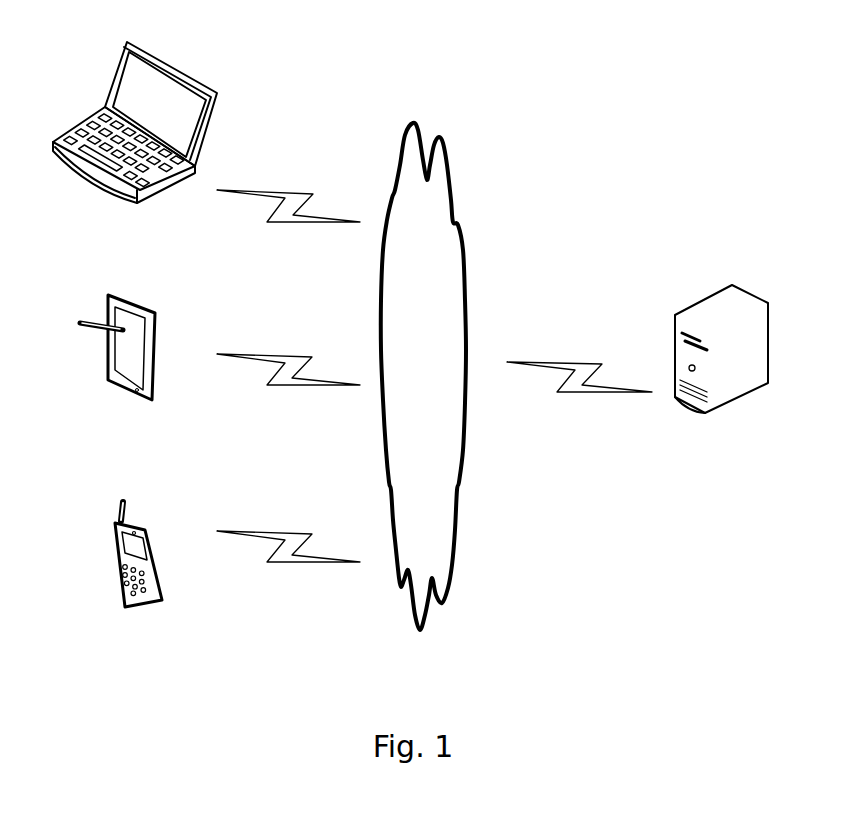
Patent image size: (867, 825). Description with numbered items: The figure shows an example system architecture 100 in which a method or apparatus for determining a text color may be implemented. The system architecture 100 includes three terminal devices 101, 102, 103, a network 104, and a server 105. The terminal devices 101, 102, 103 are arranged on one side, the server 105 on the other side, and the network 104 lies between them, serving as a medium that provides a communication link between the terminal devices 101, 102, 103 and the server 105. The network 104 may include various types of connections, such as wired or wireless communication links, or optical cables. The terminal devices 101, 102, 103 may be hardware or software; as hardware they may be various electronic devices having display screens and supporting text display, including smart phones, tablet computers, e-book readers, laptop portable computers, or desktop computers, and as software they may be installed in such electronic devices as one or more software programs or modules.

The system architecture 100 is at (677, 31).
The terminal device 101 is at (138, 574).
The terminal device 102 is at (117, 367).
The terminal device 103 is at (135, 140).
The network 104 is at (434, 376).
The server 105 is at (721, 371).